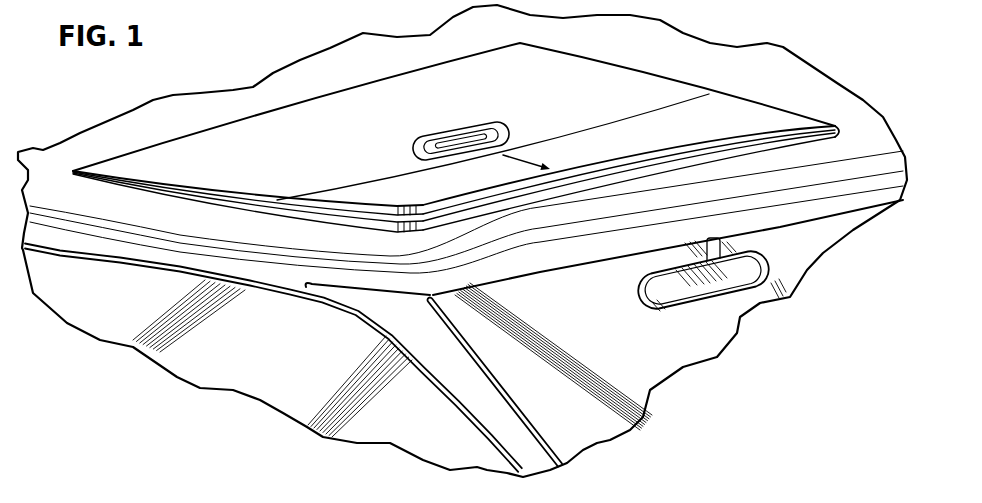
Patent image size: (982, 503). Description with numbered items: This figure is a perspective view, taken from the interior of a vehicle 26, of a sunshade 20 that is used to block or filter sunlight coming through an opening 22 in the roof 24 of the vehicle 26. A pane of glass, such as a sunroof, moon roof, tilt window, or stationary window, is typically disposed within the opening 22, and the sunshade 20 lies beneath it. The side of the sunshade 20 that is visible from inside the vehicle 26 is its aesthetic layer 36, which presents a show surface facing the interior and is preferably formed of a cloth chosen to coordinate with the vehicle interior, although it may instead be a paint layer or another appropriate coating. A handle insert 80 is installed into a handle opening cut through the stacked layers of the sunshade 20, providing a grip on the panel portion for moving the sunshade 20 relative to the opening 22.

The sunshade 20 is at (466, 162).
The opening 22 is at (731, 110).
The roof 24 is at (752, 61).
The vehicle 26 is at (211, 372).
The aesthetic layer 36 is at (308, 159).
The handle insert 80 is at (447, 150).